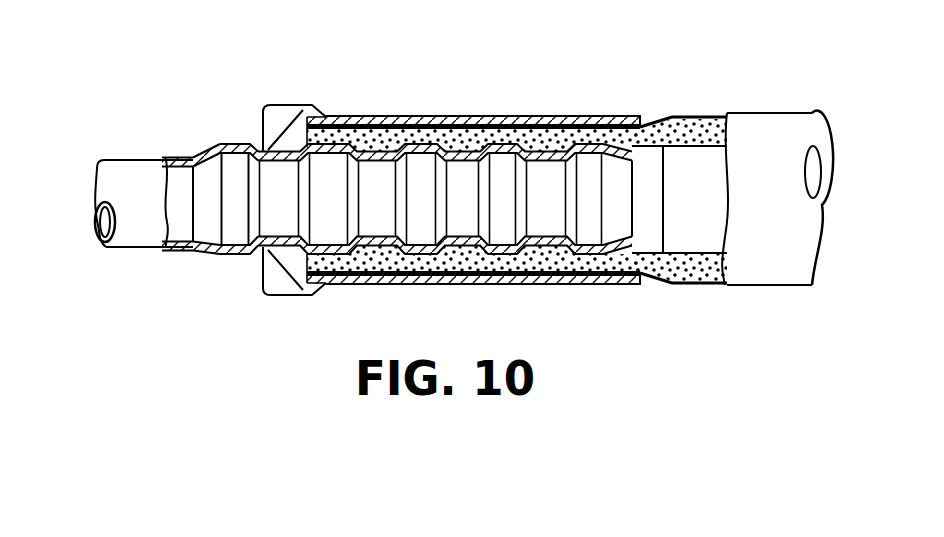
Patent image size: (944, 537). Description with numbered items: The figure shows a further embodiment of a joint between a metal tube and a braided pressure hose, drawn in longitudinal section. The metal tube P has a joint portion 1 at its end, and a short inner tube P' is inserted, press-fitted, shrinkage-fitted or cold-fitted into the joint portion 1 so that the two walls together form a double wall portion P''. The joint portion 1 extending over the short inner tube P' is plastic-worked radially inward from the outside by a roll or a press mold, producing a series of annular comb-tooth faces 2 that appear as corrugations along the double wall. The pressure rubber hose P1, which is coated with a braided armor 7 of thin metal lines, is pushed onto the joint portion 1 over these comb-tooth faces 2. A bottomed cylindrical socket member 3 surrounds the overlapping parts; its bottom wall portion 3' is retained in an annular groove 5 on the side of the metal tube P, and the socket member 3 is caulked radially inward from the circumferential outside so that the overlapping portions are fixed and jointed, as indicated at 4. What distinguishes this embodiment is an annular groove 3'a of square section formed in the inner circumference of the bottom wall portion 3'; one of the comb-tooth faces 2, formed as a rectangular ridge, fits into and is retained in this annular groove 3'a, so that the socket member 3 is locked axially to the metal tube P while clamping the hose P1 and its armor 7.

The joint portion 1 is at (419, 150).
The comb-tooth faces 2 is at (448, 146).
The socket member 3 is at (473, 169).
The bottom wall portion 3' is at (304, 163).
The annular groove 3'a is at (276, 152).
The caulked fixing portion 4 is at (486, 122).
The annular groove 5 is at (264, 140).
The braided armor 7 is at (720, 114).
The metal tube P is at (144, 163).
The short inner tube P' is at (600, 146).
The double wall portion P'' is at (528, 146).
The pressure rubber hose P1 is at (687, 128).